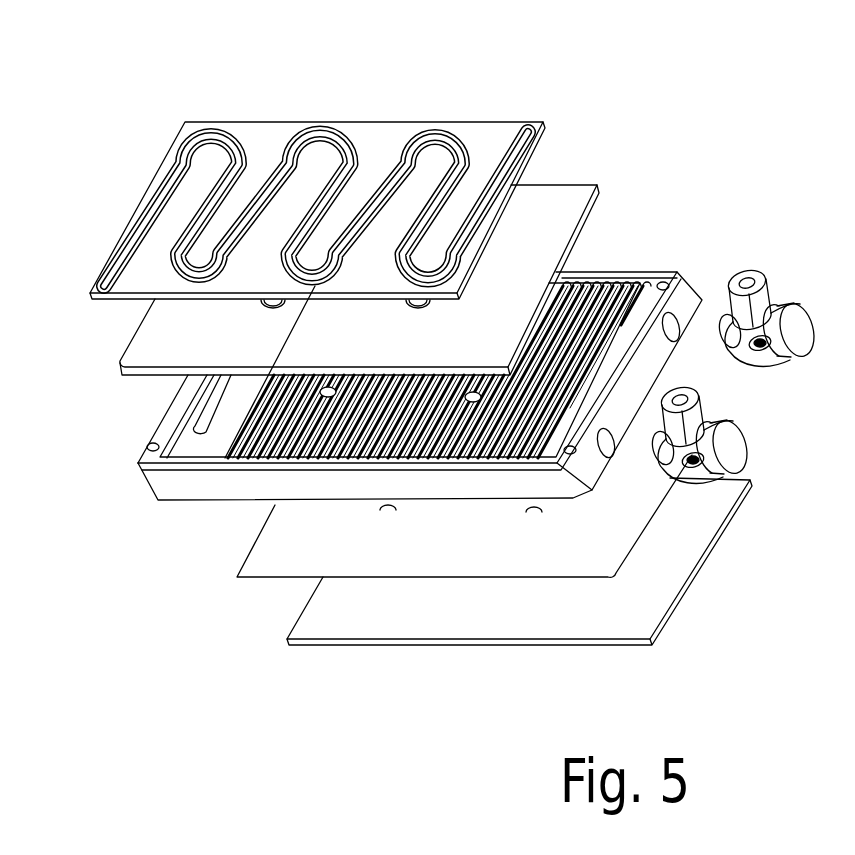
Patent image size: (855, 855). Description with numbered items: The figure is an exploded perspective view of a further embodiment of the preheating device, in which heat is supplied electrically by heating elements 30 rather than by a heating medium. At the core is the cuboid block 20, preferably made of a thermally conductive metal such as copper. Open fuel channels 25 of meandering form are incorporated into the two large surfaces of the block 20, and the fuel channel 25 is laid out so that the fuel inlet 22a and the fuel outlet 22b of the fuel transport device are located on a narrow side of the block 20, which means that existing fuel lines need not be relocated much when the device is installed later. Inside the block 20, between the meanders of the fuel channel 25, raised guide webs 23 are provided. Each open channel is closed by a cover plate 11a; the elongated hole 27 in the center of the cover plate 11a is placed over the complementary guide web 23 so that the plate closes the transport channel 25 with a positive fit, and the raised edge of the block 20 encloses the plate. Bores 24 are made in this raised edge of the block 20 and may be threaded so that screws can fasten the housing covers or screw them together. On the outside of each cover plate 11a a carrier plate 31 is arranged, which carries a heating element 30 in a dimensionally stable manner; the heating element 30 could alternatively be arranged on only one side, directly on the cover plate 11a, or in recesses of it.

The cover plate 11a is at (536, 223).
The block 20 is at (175, 483).
The fuel inlet 22a is at (680, 307).
The fuel outlet 22b is at (623, 447).
The guide web 23 is at (233, 457).
The bores 24 is at (147, 448).
The fuel channel 25 is at (469, 445).
The elongated hole 27 is at (264, 302).
The heating element 30 is at (330, 142).
The carrier plate 31 is at (382, 147).